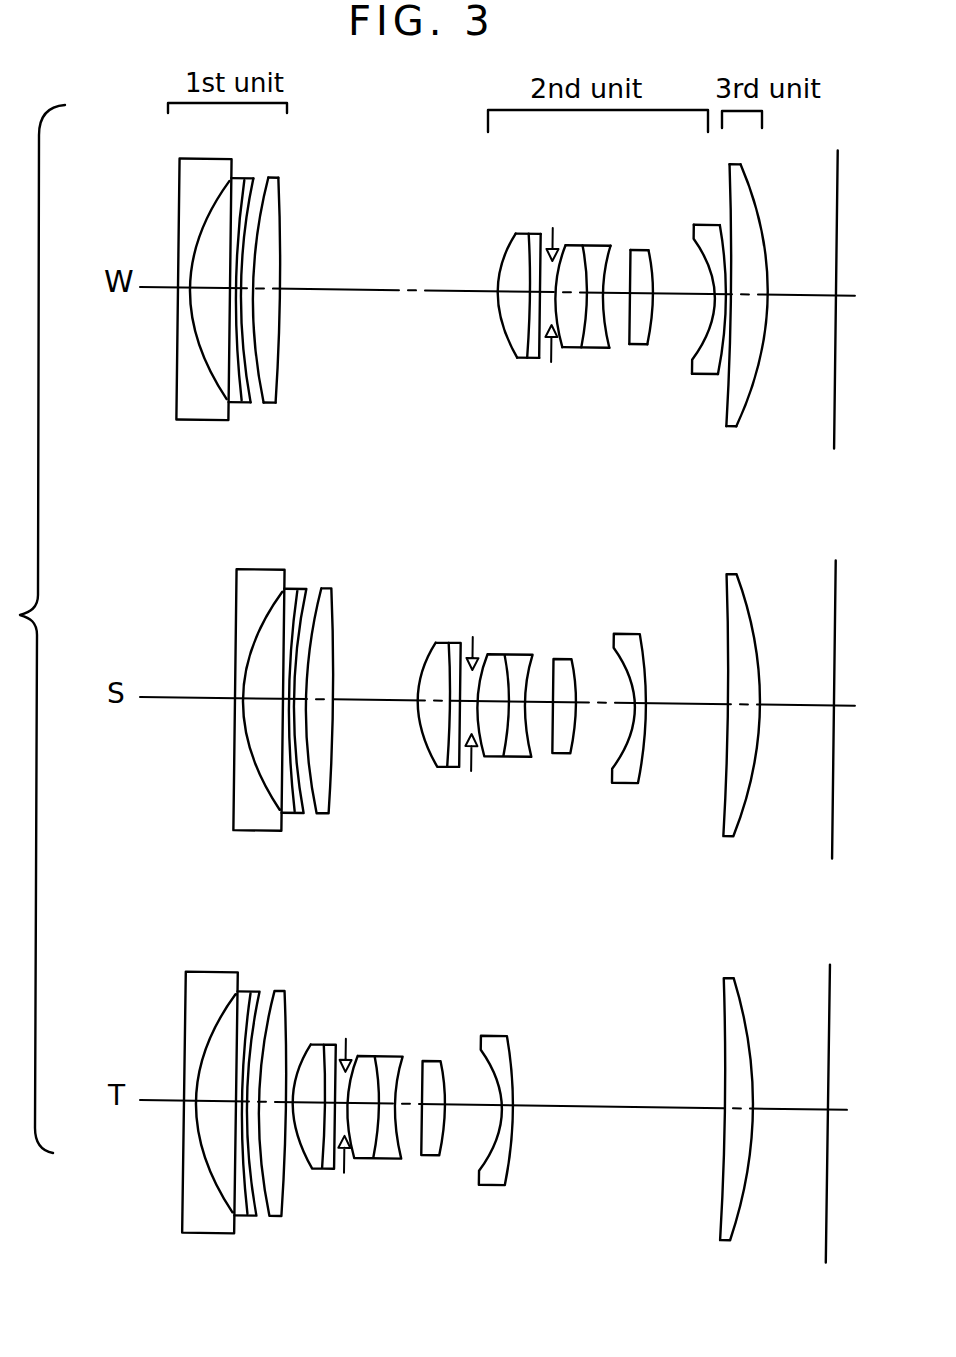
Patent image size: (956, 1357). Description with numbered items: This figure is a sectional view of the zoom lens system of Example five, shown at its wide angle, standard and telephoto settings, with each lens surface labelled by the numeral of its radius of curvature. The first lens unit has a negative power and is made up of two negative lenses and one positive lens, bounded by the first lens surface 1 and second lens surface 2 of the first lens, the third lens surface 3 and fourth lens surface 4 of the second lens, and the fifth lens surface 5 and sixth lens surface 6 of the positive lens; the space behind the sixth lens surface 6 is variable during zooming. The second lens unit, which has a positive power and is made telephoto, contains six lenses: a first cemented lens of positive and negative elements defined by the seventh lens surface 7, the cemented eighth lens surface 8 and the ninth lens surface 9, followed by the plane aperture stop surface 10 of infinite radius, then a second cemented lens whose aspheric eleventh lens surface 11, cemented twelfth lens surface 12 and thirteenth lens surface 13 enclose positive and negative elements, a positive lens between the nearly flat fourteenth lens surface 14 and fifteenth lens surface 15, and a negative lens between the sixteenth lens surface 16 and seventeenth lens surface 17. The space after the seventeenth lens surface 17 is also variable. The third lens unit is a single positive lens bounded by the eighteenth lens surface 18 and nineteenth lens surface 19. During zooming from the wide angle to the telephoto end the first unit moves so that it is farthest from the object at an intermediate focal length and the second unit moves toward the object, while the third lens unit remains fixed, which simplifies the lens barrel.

The first lens surface 1 is at (178, 177).
The second lens surface 2 is at (213, 203).
The third lens surface 3 is at (241, 184).
The fourth lens surface 4 is at (250, 184).
The fifth lens surface 5 is at (268, 181).
The sixth lens surface 6 is at (281, 195).
The seventh lens surface 7 is at (513, 246).
The eighth lens surface 8 is at (525, 252).
The ninth lens surface 9 is at (540, 233).
The stop surface 10 is at (564, 244).
The eleventh lens surface 11 is at (578, 250).
The twelfth lens surface 12 is at (604, 252).
The thirteenth lens surface 13 is at (630, 248).
The fourteenth lens surface 14 is at (630, 260).
The fifteenth lens surface 15 is at (650, 258).
The sixteenth lens surface 16 is at (693, 247).
The seventeenth lens surface 17 is at (714, 231).
The eighteenth lens surface 18 is at (728, 198).
The nineteenth lens surface 19 is at (752, 200).